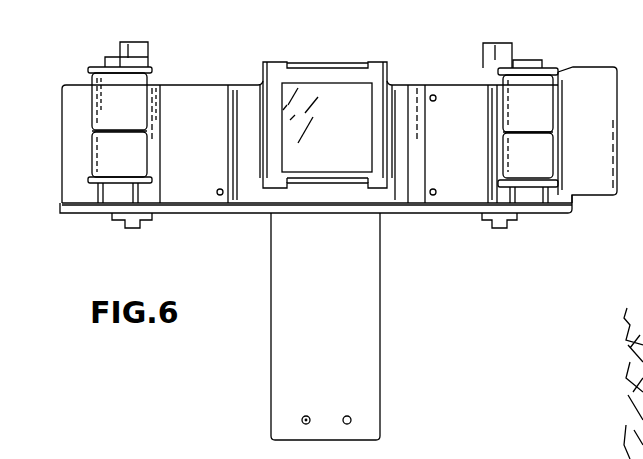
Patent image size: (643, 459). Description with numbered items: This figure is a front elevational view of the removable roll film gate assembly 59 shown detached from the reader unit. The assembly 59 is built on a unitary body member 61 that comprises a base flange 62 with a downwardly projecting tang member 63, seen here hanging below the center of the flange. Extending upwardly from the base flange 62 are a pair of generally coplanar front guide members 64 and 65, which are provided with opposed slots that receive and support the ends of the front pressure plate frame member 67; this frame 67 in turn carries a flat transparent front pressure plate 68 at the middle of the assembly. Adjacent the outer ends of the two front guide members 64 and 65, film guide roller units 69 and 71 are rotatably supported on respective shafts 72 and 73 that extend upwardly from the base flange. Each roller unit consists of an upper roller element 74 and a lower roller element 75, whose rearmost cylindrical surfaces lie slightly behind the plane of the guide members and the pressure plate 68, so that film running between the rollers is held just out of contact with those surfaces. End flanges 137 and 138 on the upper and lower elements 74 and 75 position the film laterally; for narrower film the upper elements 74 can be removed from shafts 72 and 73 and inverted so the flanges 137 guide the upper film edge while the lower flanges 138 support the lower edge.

The roll film gate assembly 59 is at (618, 117).
The unitary body member 61 is at (460, 84).
The base flange 62 is at (395, 208).
The tang member 63 is at (380, 292).
The front guide member 64 is at (183, 190).
The front guide member 65 is at (450, 185).
The front pressure plate frame member 67 is at (273, 74).
The front pressure plate 68 is at (360, 90).
The film guide roller unit 69 is at (100, 150).
The film guide roller unit 71 is at (540, 168).
The shaft 72 is at (118, 60).
The shaft 73 is at (522, 60).
The upper roller element 74 is at (100, 112).
The lower roller element 75 is at (95, 165).
The end flange 137 is at (95, 68).
The end flange 138 is at (90, 180).